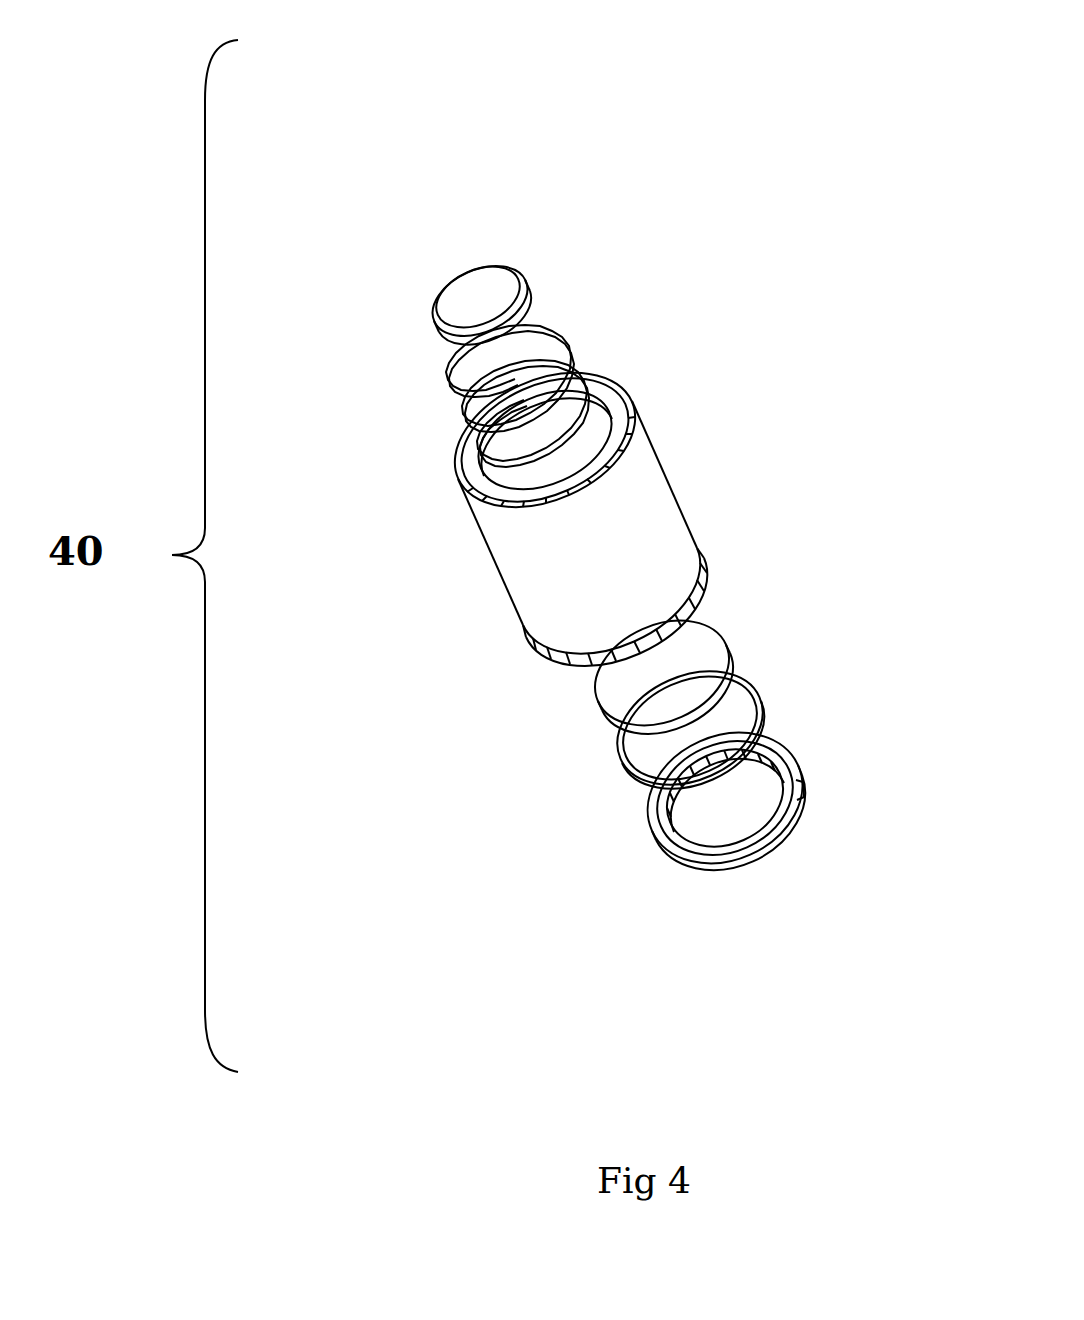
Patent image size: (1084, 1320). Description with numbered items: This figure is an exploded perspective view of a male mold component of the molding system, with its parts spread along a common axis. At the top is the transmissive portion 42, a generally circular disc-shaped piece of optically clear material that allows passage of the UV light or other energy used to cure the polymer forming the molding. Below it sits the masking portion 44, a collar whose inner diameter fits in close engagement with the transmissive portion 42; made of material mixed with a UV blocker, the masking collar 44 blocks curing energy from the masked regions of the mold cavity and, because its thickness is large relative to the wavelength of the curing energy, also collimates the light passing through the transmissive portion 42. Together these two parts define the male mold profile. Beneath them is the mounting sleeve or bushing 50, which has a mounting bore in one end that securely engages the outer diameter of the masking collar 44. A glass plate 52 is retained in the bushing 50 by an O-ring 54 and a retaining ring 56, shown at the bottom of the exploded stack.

The transmissive portion 42 is at (488, 287).
The masking portion 44 is at (558, 371).
The mounting sleeve or bushing 50 is at (650, 505).
The glass plate 52 is at (699, 668).
The O-ring 54 is at (627, 770).
The retaining ring 56 is at (691, 858).